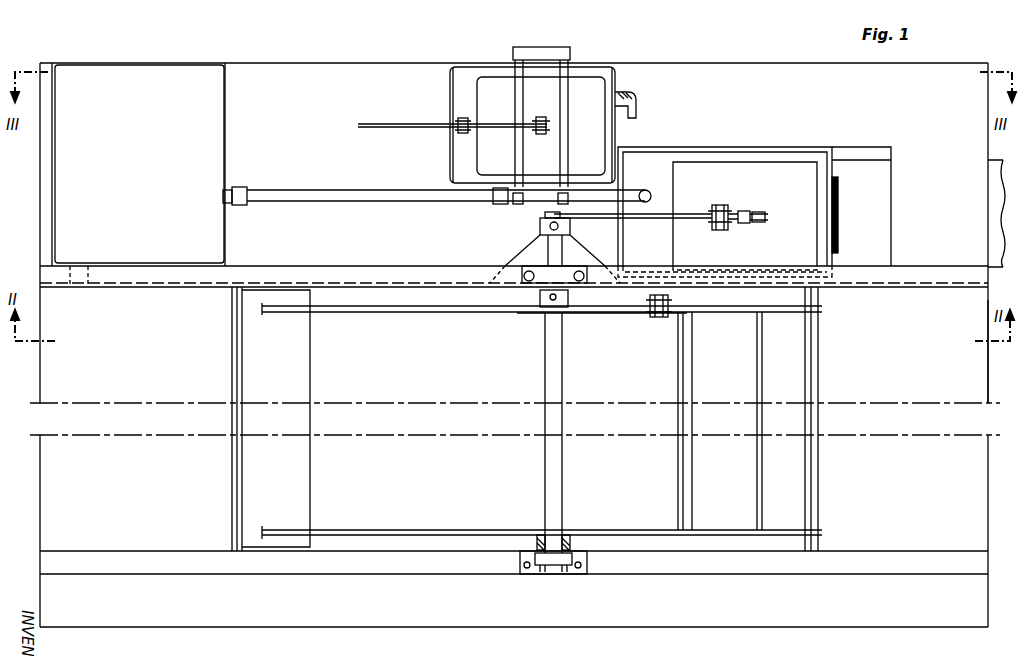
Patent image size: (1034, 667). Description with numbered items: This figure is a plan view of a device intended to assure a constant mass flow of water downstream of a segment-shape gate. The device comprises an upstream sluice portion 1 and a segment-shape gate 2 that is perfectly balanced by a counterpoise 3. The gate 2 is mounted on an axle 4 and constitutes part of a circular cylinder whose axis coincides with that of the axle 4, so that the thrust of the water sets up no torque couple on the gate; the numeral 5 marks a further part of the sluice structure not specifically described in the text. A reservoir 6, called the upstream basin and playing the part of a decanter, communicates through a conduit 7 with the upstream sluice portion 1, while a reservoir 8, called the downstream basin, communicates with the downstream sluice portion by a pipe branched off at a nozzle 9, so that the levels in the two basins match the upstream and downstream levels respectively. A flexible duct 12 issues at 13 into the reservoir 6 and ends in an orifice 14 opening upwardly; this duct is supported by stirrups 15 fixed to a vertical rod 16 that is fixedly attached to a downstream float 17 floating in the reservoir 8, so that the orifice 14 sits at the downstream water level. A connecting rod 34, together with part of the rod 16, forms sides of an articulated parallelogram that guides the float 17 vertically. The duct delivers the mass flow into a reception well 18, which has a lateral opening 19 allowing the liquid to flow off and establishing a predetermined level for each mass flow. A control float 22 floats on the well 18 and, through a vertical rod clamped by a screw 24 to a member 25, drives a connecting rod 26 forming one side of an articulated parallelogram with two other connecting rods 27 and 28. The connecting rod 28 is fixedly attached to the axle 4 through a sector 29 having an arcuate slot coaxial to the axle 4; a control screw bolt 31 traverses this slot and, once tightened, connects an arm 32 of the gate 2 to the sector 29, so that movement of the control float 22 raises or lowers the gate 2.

The upstream sluice portion 1 is at (52, 375).
The segment-shape gate 2 is at (255, 349).
The counterpoise 3 is at (795, 340).
The axle 4 is at (548, 357).
The side wall 5 is at (978, 357).
The reservoir 6 is at (133, 72).
The conduit 7 is at (80, 275).
The reservoir 8 is at (617, 70).
The nozzle 9 is at (634, 118).
The flexible duct 12 is at (358, 200).
The issue point of flexible duct 13 is at (222, 196).
The orifice 14 is at (650, 189).
The stirrups 15 is at (518, 155).
The vertical rod 16 is at (549, 123).
The downstream float 17 is at (585, 88).
The reception well 18 is at (827, 152).
The lateral opening 19 is at (838, 230).
The control float 22 is at (791, 170).
The screw 24 is at (766, 216).
The member 25 is at (736, 223).
The connecting rod 26 is at (712, 212).
The connecting rod 27 is at (745, 210).
The connecting rod 28 is at (647, 221).
The sector 29 is at (600, 300).
The control screw bolt 31 is at (674, 299).
The arm 32 is at (640, 315).
The connecting rod 34 is at (487, 128).